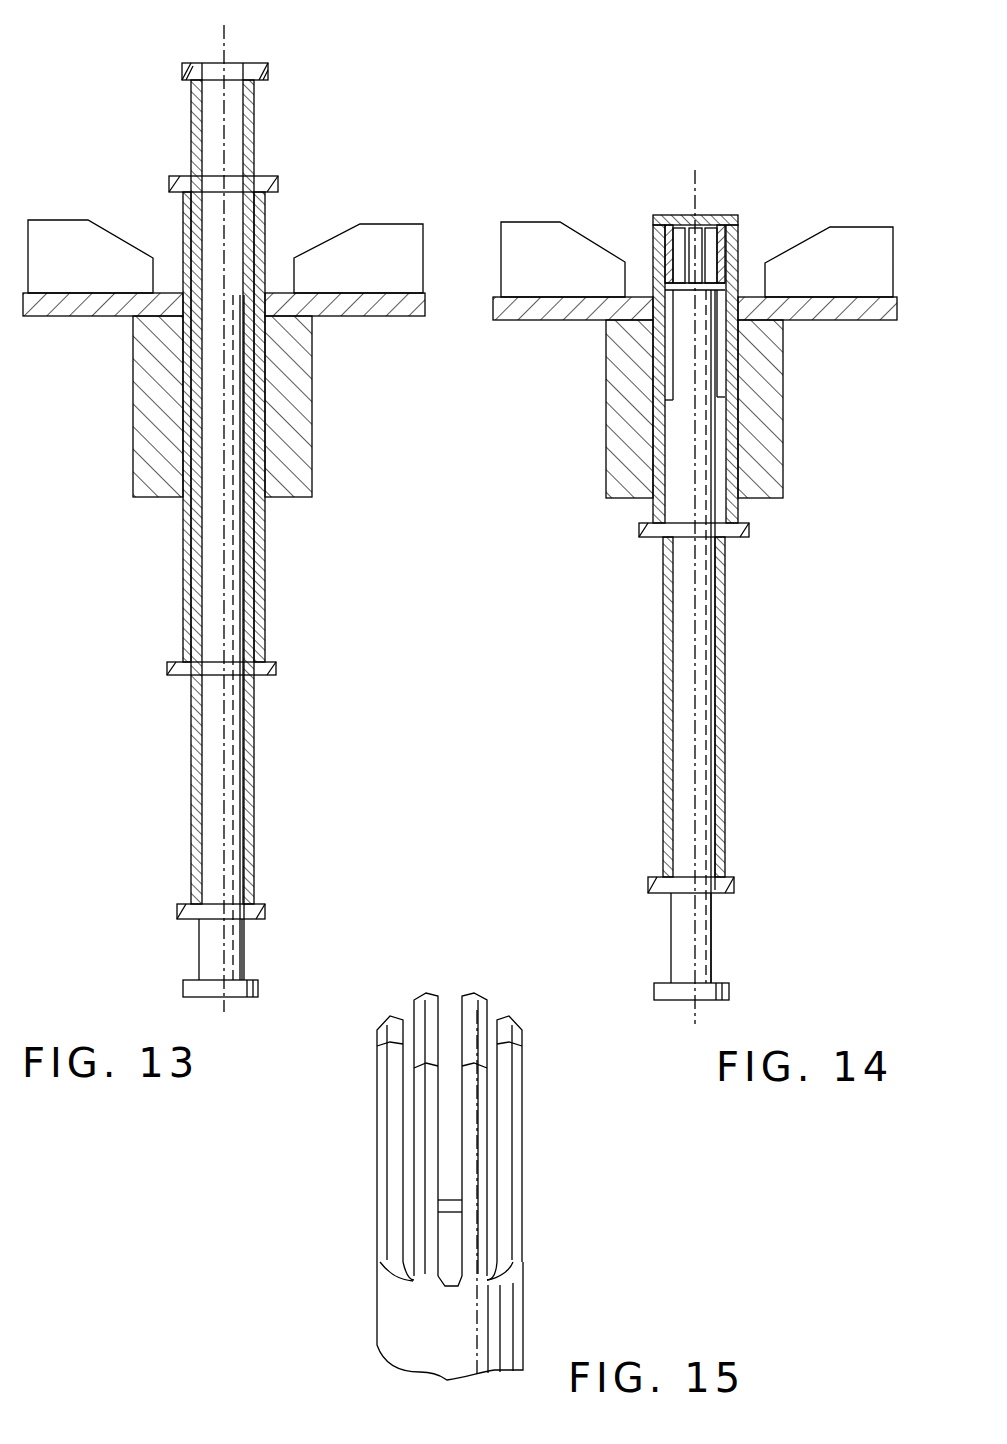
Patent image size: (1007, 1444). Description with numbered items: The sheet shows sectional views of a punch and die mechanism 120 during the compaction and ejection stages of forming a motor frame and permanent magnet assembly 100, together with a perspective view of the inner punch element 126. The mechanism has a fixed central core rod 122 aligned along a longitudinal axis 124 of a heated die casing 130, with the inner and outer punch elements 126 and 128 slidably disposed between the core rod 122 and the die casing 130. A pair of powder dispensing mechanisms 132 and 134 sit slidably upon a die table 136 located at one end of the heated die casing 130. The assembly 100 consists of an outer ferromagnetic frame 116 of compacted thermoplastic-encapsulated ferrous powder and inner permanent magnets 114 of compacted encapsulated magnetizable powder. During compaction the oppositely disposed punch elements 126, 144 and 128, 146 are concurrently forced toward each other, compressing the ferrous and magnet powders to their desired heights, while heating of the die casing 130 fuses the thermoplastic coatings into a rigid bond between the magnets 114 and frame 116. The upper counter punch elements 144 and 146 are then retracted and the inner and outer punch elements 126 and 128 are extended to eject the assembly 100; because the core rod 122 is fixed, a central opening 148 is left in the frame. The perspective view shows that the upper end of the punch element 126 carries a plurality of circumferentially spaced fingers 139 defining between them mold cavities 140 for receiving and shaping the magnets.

In FIG. 14, the motor frame and permanent magnet assembly 100 is at (723, 212).
In FIG. 13, the permanent magnets 114 is at (245, 397).
In FIG. 14, the permanent magnets 114 is at (697, 215).
In FIG. 13, the ferromagnetic frame 116 is at (248, 367).
In FIG. 14, the ferromagnetic frame 116 is at (732, 257).
In FIG. 13, the punch and die mechanism 120 is at (96, 477).
In FIG. 14, the punch and die mechanism 120 is at (573, 471).
In FIG. 13, the central core rod 122 is at (200, 945).
In FIG. 14, the central core rod 122 is at (683, 925).
In FIG. 13, the longitudinal axis 124 is at (222, 50).
In FIG. 14, the longitudinal axis 124 is at (693, 187).
In FIG. 13, the inner punch element 126 is at (250, 603).
In FIG. 14, the inner punch element 126 is at (722, 618).
In FIG. 15, the inner punch element 126 is at (403, 1318).
In FIG. 13, the outer punch element 128 is at (262, 672).
In FIG. 14, the outer punch element 128 is at (735, 532).
In FIG. 13, the heated die casing 130 is at (300, 452).
In FIG. 14, the heated die casing 130 is at (770, 455).
In FIG. 13, the powder dispensing mechanism 132 is at (365, 238).
In FIG. 14, the powder dispensing mechanism 132 is at (847, 240).
In FIG. 13, the powder dispensing mechanism 134 is at (48, 237).
In FIG. 14, the powder dispensing mechanism 134 is at (535, 240).
In FIG. 13, the die table 136 is at (372, 315).
In FIG. 14, the die table 136 is at (825, 312).
In FIG. 14, the fingers 139 is at (713, 340).
In FIG. 15, the fingers 139 is at (420, 995).
In FIG. 15, the mold cavities 140 is at (440, 1010).
In FIG. 13, the upper counter punch element 144 is at (253, 95).
In FIG. 13, the upper counter punch element 146 is at (183, 218).
In FIG. 14, the central opening 148 is at (727, 243).